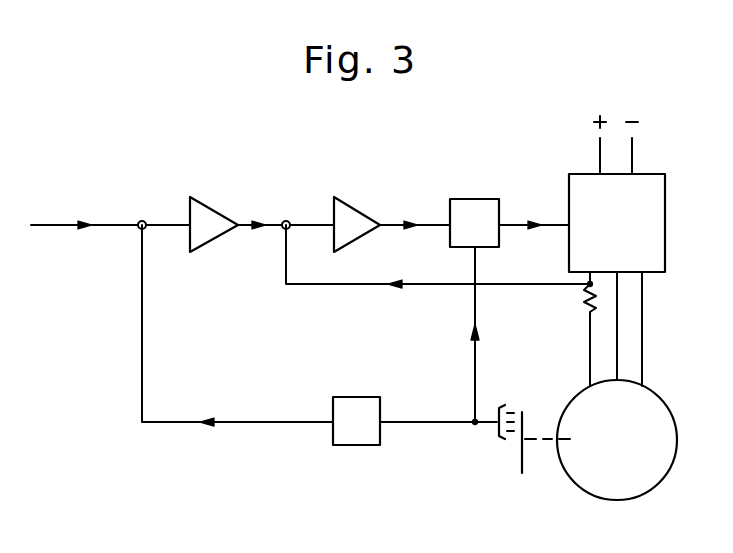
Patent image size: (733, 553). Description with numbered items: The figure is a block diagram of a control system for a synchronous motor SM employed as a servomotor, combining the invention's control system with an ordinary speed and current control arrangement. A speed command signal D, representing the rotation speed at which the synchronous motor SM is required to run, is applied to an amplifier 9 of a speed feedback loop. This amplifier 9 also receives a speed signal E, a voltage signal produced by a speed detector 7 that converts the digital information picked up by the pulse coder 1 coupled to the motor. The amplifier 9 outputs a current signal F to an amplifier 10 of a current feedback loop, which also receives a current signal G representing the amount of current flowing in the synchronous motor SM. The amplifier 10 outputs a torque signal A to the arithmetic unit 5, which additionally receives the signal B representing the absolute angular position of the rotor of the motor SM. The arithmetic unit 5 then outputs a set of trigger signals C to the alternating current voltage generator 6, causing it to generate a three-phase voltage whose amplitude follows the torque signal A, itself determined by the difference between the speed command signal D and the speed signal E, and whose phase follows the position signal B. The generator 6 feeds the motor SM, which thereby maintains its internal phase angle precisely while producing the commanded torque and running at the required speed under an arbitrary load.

The pulse coder 1 is at (527, 421).
The arithmetic unit 5 is at (483, 197).
The alternating current voltage generator 6 is at (667, 222).
The speed detector 7 is at (357, 447).
The amplifier 9 is at (218, 205).
The amplifier 10 is at (364, 205).
The torque signal A is at (408, 218).
The signal representing absolute angular position of the rotor B is at (480, 338).
The trigger signals C is at (537, 220).
The speed command signal D is at (100, 218).
The speed signal E is at (200, 432).
The current signal F is at (273, 215).
The current signal G is at (388, 290).
The synchronous motor SM is at (617, 386).